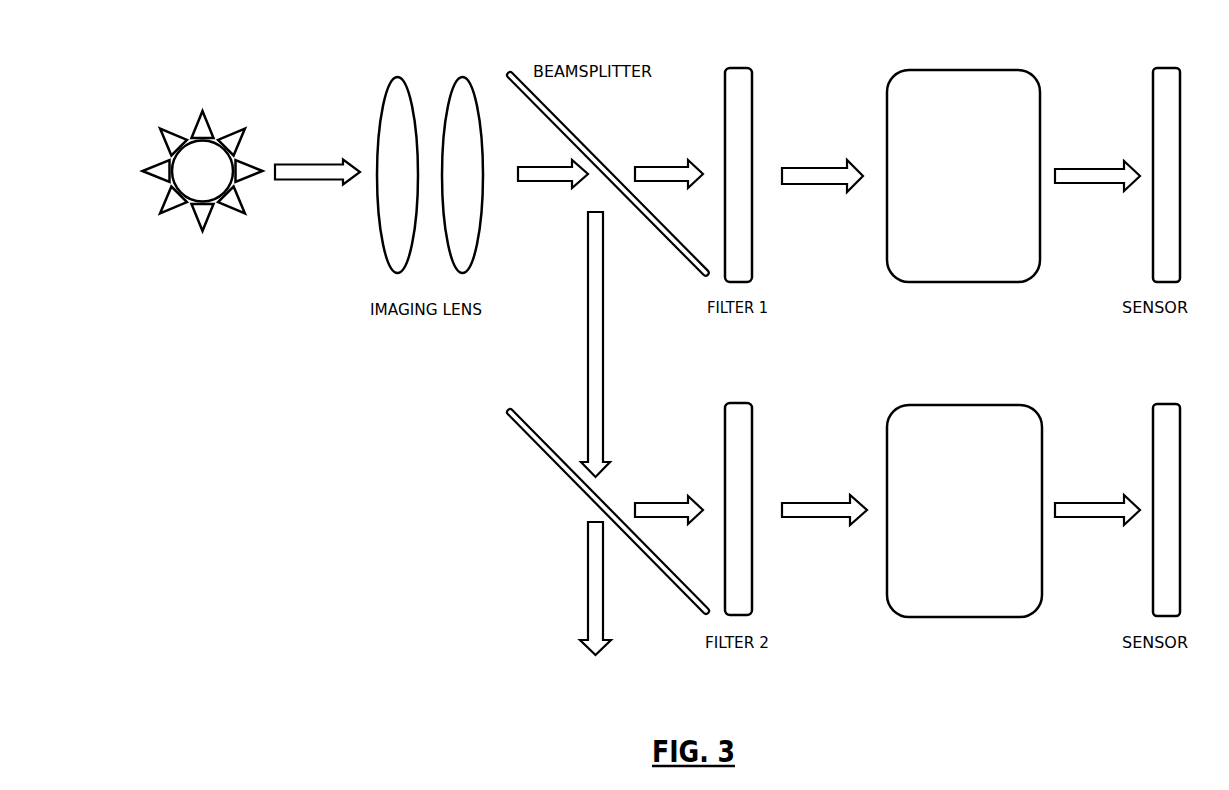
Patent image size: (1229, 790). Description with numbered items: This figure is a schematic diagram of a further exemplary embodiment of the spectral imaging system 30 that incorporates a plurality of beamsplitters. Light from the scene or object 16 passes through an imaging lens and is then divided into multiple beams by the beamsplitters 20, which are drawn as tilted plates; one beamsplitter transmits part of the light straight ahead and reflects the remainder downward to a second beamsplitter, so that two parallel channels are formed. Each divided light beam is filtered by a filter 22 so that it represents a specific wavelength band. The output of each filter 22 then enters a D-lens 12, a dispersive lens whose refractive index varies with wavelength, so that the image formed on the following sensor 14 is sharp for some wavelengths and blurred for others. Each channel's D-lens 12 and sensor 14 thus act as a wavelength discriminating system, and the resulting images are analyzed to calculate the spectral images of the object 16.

The D-lens 12 is at (982, 57).
The sensor 14 is at (1165, 52).
The object 16 is at (246, 113).
The beamsplitter 20 is at (607, 153).
The filter 22 is at (740, 52).
The spectral imaging system 30 is at (835, 72).